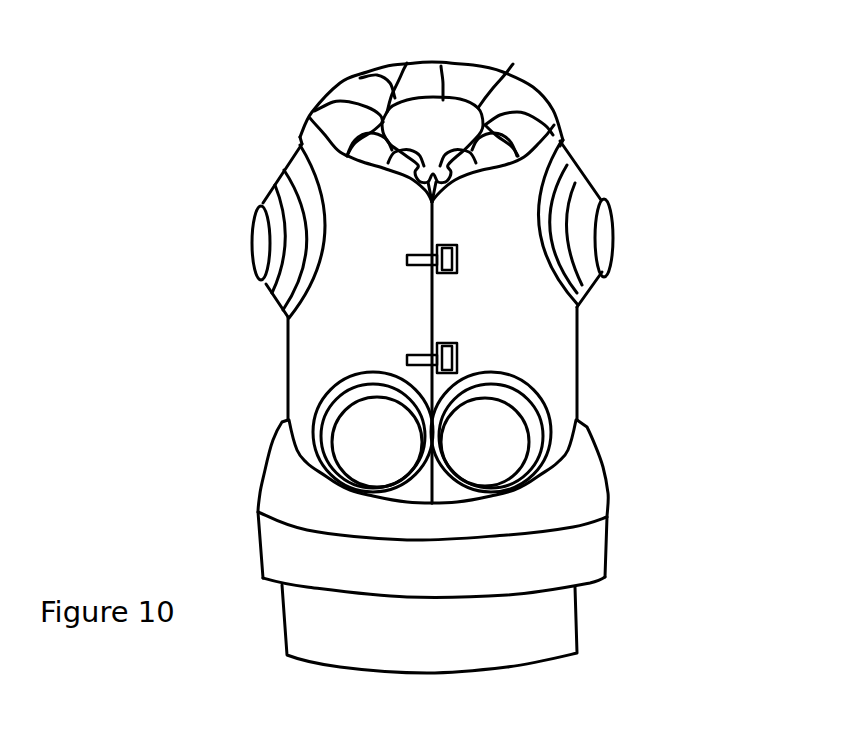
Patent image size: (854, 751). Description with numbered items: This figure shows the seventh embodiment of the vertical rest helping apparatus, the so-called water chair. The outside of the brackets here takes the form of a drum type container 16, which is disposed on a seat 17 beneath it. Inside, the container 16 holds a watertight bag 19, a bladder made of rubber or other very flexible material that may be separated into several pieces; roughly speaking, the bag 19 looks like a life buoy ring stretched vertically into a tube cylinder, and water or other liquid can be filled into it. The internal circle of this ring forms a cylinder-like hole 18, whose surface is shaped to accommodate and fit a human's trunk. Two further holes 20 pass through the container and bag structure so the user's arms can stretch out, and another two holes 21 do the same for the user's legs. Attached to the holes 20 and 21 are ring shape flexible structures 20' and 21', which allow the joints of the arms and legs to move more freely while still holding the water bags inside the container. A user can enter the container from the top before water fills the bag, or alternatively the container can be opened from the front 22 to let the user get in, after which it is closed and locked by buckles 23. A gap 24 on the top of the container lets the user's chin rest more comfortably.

The drum type container 16 is at (525, 330).
The seat 17 is at (535, 512).
The cylinder-like hole 18 is at (438, 127).
The watertight bag 19 is at (332, 122).
The arm holes 20 is at (440, 239).
The ring shape flexible structures for arm holes 20' is at (426, 223).
The leg holes 21 is at (436, 451).
The ring shape flexible structures for leg holes 21' is at (438, 432).
The front 22 is at (437, 288).
The buckles 23 is at (418, 265).
The gap 24 is at (438, 197).